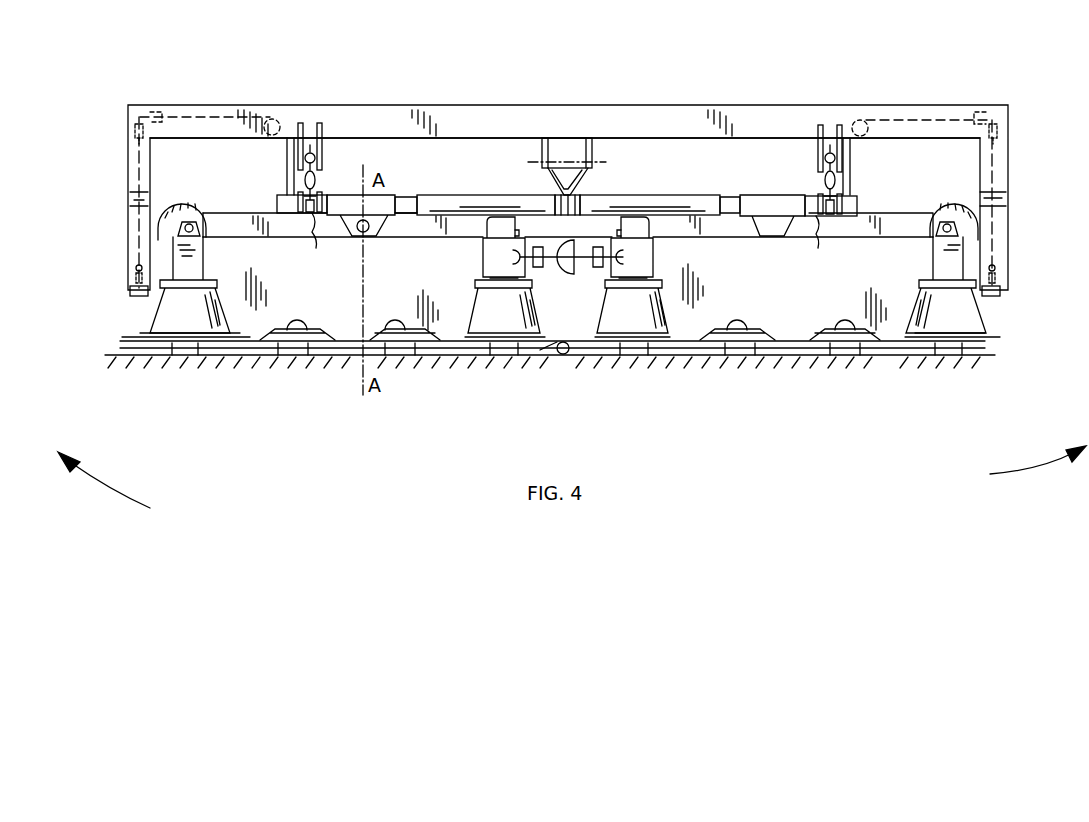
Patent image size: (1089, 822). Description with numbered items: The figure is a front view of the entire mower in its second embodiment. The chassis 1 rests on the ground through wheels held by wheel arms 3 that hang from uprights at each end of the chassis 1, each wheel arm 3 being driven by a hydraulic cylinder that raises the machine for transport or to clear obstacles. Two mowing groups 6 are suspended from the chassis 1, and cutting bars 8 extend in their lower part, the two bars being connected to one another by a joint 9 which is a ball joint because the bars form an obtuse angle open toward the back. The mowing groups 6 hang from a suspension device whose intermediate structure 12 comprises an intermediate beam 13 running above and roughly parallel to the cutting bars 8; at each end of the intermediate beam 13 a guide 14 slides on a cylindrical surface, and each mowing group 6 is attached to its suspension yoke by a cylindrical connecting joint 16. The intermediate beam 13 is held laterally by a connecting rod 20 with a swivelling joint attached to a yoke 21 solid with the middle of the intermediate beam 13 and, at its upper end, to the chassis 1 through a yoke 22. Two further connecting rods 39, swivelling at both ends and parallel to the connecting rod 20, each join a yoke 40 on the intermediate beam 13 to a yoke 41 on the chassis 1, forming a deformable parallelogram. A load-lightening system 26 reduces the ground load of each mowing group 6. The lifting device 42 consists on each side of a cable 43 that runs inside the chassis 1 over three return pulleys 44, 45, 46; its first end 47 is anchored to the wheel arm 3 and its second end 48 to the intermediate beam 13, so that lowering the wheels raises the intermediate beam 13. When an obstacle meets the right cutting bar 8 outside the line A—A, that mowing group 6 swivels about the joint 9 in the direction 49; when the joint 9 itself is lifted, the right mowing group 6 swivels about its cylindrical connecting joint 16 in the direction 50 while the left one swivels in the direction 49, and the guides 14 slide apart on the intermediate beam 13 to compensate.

The chassis 1 is at (630, 102).
The wheel arm 3 is at (130, 291).
The mowing group 6 is at (434, 275).
The cutting bar 8 is at (240, 350).
The joint 9 is at (563, 355).
The intermediate structure 12 is at (663, 194).
The intermediate beam 13 is at (457, 198).
The guide 14 is at (386, 196).
The cylindrical connecting joint 16 is at (366, 232).
The connecting rod 20 is at (584, 170).
The yoke 21 is at (556, 200).
The yoke 22 is at (540, 136).
The load-lightening system 26 is at (291, 136).
The connecting rod 39 is at (318, 174).
The yoke 40 is at (318, 216).
The yoke 41 is at (322, 136).
The lifting device 42 is at (205, 106).
The cable 43 is at (139, 173).
The return pulley 44 is at (276, 120).
The return pulley 45 is at (160, 110).
The return pulley 46 is at (133, 130).
The first end 47 is at (136, 268).
The second end 48 is at (277, 196).
The direction 49 is at (130, 500).
The direction 50 is at (1022, 470).